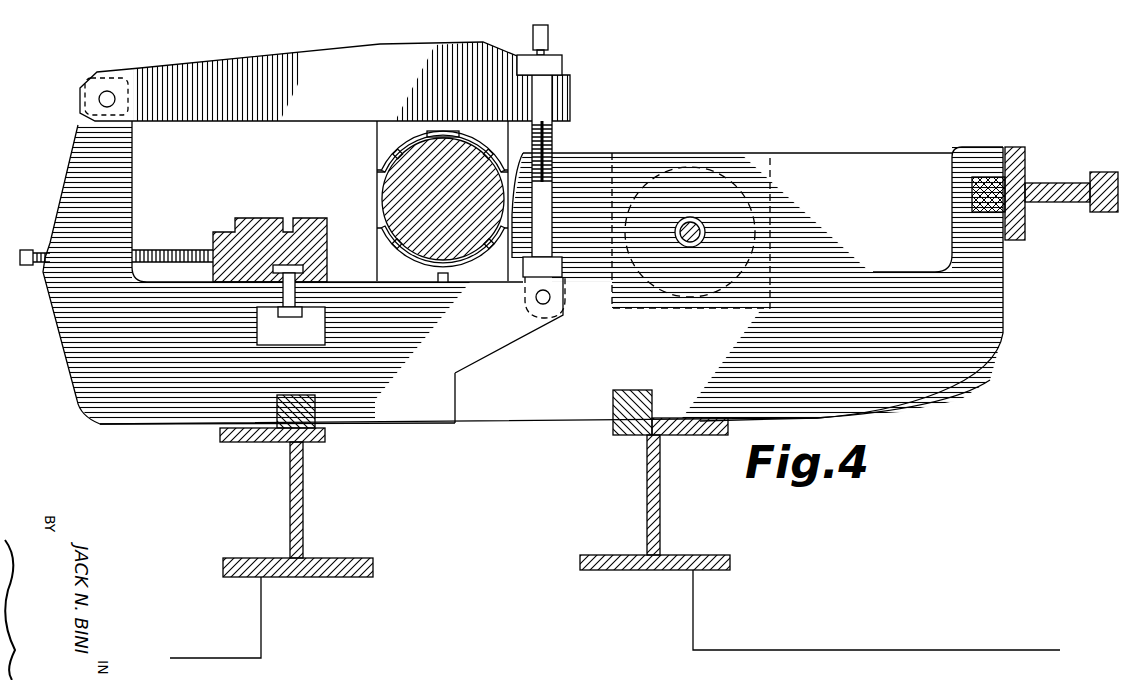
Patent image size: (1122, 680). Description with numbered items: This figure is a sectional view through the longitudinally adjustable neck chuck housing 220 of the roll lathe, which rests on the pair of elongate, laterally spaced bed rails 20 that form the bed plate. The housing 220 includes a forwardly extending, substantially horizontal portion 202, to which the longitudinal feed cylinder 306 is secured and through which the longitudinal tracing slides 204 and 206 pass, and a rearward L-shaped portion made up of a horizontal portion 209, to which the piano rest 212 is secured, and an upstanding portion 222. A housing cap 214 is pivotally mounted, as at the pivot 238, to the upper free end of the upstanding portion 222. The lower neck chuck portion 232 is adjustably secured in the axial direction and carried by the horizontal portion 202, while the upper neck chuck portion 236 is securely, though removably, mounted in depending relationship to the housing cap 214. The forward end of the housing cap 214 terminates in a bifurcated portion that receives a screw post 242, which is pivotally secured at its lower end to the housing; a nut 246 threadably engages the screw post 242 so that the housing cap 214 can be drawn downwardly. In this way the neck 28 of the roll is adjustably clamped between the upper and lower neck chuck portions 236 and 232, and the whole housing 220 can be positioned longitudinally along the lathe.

The bed rails 20 is at (302, 511).
The neck 28 is at (384, 195).
The horizontal portion 202 is at (916, 163).
The longitudinal tracing slide 204 is at (640, 392).
The longitudinal tracing slide 206 is at (1022, 163).
The horizontal portion 209 is at (168, 414).
The piano rest 212 is at (262, 232).
The housing cap 214 is at (324, 57).
The longitudinally adjustable neck chuck housing 220 is at (945, 389).
The upstanding portion 222 is at (80, 183).
The lower neck chuck portion 232 is at (378, 243).
The upper neck chuck portion 236 is at (377, 143).
The pivot 238 is at (98, 99).
The screw post 242 is at (549, 50).
The nut 246 is at (562, 68).
The longitudinal feed cylinder 306 is at (731, 174).